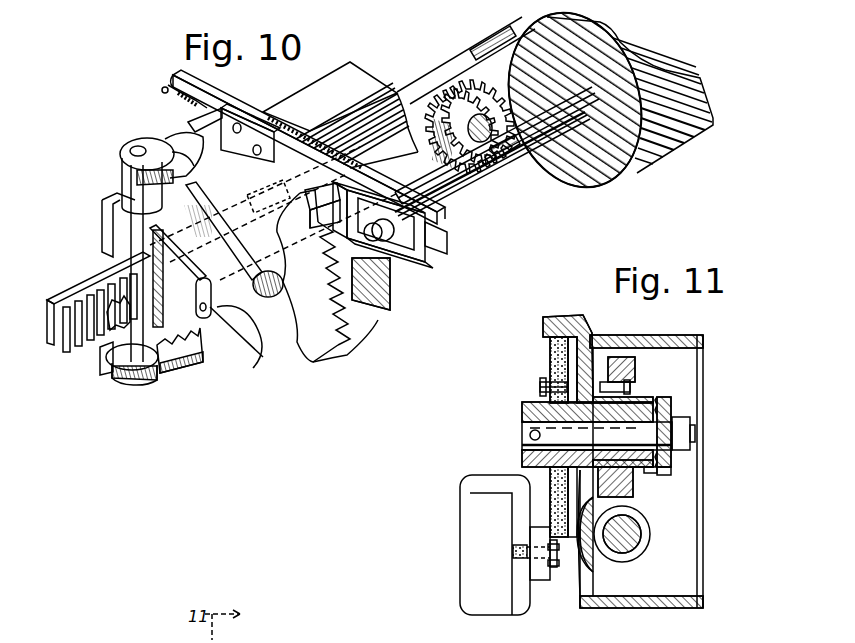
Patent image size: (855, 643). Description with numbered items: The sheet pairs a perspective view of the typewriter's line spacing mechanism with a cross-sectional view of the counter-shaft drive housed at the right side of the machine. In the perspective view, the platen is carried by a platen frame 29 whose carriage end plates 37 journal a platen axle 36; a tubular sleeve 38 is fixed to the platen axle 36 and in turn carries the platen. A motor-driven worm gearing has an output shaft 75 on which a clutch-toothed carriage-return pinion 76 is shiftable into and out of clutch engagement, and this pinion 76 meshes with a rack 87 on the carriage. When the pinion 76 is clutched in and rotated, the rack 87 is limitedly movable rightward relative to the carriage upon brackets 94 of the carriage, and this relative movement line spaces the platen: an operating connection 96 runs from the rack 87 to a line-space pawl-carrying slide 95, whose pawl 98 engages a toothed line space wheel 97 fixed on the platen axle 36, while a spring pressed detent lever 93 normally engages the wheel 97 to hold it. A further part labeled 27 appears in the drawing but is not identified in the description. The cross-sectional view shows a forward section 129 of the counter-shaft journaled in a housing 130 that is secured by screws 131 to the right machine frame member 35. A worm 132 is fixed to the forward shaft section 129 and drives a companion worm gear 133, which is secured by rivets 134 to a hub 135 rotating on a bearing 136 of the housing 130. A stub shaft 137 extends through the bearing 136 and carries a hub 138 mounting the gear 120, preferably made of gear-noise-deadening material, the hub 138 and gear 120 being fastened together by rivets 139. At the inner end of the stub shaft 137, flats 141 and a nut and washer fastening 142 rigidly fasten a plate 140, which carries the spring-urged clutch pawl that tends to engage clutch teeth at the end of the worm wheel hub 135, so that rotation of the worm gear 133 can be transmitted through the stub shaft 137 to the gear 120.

In FIG. 10, the drum 27 is at (611, 188).
In FIG. 10, the platen frame 29 is at (358, 80).
In FIG. 11, the right machine frame member 35 is at (512, 503).
In FIG. 10, the platen axle 36 is at (466, 180).
In FIG. 10, the carriage end plates 37 is at (312, 115).
In FIG. 10, the tubular sleeve 38 is at (610, 82).
In FIG. 10, the output shaft 75 is at (512, 138).
In FIG. 10, the carriage-return pinion 76 is at (442, 143).
In FIG. 10, the rack 87 is at (432, 78).
In FIG. 10, the detent lever 93 is at (212, 318).
In FIG. 10, the brackets 94 is at (257, 215).
In FIG. 10, the line-space pawl-carrying slide 95 is at (455, 235).
In FIG. 10, the operating connection 96 is at (108, 323).
In FIG. 10, the line space wheel 97 is at (250, 346).
In FIG. 10, the pawl 98 is at (303, 205).
In FIG. 11, the gear 120 is at (550, 357).
In FIG. 11, the forward shaft section 129 is at (645, 527).
In FIG. 11, the housing 130 is at (678, 608).
In FIG. 11, the screws 131 is at (560, 570).
In FIG. 11, the worm 132 is at (655, 548).
In FIG. 11, the worm gear 133 is at (635, 368).
In FIG. 11, the rivets 134 is at (633, 388).
In FIG. 11, the hub 135 is at (634, 473).
In FIG. 11, the bearing 136 is at (663, 392).
In FIG. 11, the stub shaft 137 is at (518, 437).
In FIG. 11, the hub 138 is at (532, 406).
In FIG. 11, the rivets 139 is at (542, 388).
In FIG. 11, the plate 140 is at (658, 476).
In FIG. 11, the flats 141 is at (668, 471).
In FIG. 11, the nut and washer fastening 142 is at (672, 462).